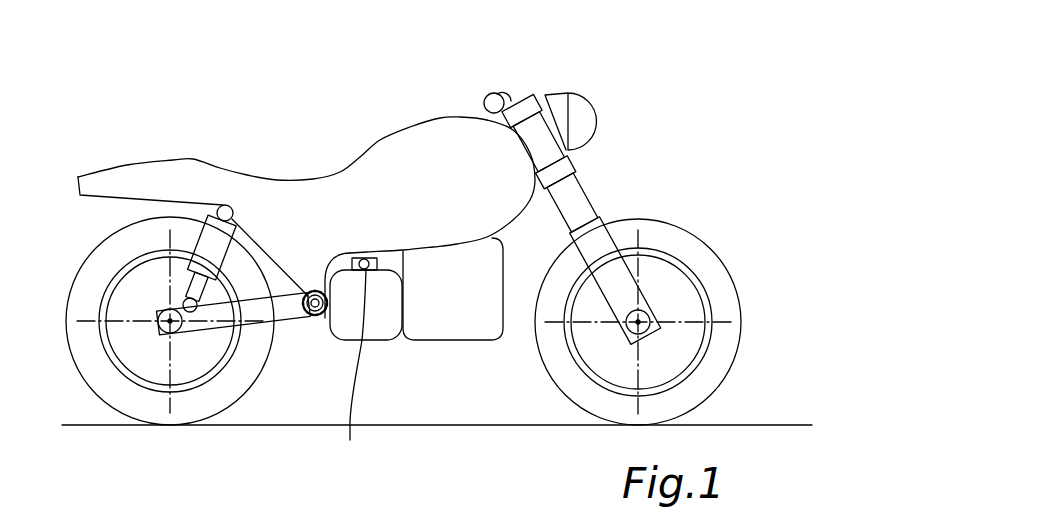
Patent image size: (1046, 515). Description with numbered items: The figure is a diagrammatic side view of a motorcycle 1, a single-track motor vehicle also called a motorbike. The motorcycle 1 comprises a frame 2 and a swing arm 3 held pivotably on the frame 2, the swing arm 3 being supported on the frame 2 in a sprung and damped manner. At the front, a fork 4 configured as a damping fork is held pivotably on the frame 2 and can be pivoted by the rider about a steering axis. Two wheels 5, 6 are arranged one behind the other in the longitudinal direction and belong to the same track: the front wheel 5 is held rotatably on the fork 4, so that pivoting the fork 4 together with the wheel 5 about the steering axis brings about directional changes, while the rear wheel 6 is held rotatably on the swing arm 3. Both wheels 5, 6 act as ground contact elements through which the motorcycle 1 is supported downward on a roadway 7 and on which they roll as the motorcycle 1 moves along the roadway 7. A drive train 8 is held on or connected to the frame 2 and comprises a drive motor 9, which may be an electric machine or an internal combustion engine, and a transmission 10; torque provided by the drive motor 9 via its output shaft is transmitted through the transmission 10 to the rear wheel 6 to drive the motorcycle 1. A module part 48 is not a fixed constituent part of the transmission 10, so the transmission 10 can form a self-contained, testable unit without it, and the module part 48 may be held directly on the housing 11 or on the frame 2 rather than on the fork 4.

The motorcycle 1 is at (524, 90).
The frame 2 is at (435, 116).
The swing arm 3 is at (284, 330).
The fork 4 is at (590, 190).
The front wheel 5 is at (602, 408).
The rear wheel 6 is at (153, 410).
The roadway 7 is at (771, 421).
The drive train 8 is at (493, 350).
The drive motor 9 is at (457, 341).
The transmission 10 is at (382, 336).
The housing 11 is at (347, 328).
The module part 48 is at (350, 371).